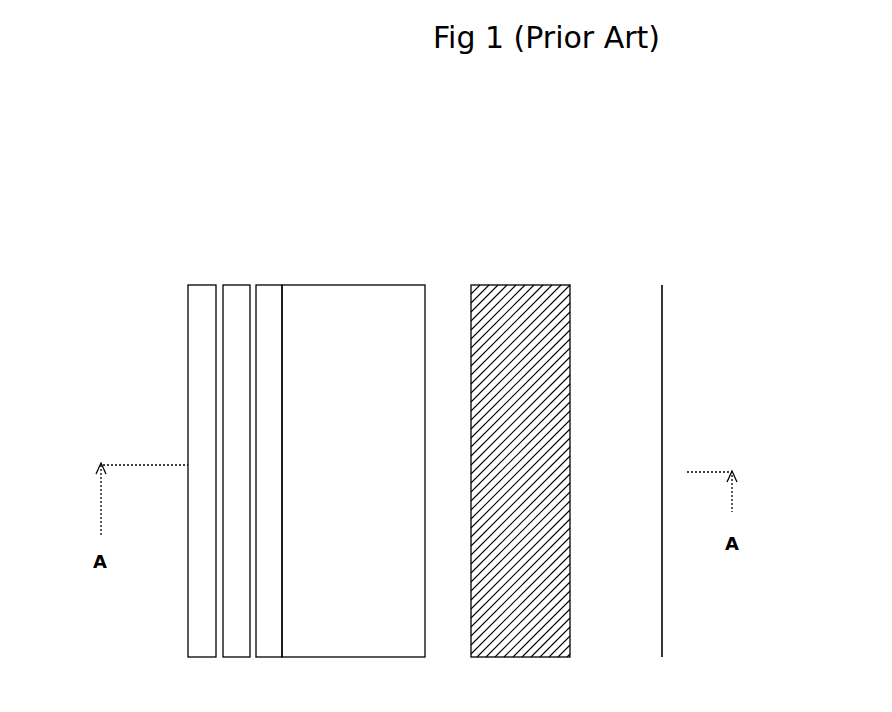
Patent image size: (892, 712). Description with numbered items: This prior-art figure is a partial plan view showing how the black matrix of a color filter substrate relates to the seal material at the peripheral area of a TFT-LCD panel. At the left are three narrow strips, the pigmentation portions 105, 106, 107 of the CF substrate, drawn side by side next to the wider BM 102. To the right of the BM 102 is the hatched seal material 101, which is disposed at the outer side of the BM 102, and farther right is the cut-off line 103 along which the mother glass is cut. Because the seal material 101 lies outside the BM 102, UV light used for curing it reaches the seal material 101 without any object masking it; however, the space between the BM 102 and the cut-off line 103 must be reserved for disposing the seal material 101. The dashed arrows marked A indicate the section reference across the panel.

The seal material 101 is at (523, 286).
The BM 102 is at (348, 285).
The cut-off line 103 is at (662, 346).
The pigmentation portion 105 is at (202, 290).
The pigmentation portion 106 is at (243, 288).
The pigmentation portion 107 is at (273, 296).